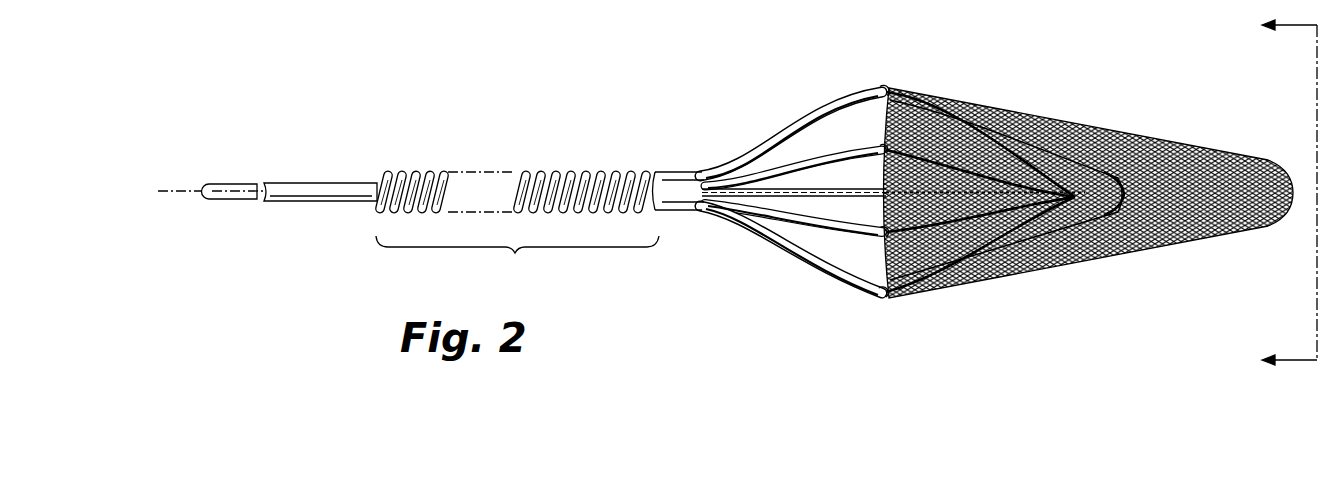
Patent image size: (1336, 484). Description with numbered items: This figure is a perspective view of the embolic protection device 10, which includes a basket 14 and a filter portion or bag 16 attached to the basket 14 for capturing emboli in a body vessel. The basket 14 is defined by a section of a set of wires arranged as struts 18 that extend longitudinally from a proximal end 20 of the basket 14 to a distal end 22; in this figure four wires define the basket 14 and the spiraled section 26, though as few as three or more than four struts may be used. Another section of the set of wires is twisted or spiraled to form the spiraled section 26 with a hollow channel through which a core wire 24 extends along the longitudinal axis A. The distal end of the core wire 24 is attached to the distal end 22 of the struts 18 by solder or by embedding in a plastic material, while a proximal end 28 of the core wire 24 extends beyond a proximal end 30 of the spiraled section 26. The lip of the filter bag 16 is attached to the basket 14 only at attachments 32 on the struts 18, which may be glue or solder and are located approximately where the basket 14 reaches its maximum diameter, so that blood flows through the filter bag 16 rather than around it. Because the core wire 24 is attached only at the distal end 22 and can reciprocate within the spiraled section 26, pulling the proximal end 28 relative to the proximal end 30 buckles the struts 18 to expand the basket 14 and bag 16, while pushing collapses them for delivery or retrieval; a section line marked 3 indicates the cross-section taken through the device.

The longitudinal axis A is at (184, 189).
The section line 3- 3 is at (1279, 193).
The embolic protection device 10 is at (706, 128).
The basket 14 is at (894, 78).
The filter bag 16 is at (1185, 240).
The struts 18 is at (752, 152).
The proximal end of the basket 20 is at (710, 212).
The distal end of the basket 22 is at (1145, 185).
The core wire 24 is at (296, 203).
The spiraled section 26 is at (517, 224).
The proximal end of the core wire 28 is at (273, 184).
The proximal end of the spiraled section 30 is at (378, 202).
The attachments 32 is at (868, 143).